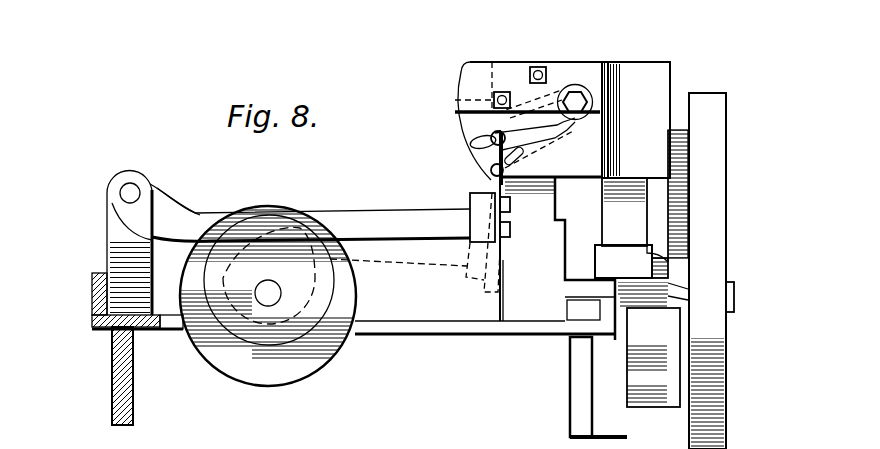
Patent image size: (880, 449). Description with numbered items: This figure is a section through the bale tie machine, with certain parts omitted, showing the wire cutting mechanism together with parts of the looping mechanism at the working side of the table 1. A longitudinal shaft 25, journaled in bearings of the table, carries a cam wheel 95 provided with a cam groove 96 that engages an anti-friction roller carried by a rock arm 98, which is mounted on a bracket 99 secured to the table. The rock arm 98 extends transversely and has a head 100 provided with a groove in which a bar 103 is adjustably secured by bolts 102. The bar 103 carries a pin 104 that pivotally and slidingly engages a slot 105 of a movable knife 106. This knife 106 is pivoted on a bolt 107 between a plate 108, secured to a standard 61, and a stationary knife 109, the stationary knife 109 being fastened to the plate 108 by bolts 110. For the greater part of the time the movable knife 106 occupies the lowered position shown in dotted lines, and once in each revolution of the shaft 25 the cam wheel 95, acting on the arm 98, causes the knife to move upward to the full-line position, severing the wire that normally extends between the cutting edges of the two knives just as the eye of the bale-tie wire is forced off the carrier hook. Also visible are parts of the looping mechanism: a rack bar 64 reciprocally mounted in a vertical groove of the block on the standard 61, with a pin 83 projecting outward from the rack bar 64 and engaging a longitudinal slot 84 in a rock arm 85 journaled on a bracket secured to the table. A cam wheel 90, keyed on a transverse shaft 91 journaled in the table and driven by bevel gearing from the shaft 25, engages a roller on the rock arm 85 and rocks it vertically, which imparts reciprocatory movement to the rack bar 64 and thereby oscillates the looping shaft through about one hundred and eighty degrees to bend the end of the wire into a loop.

The table 1 is at (92, 319).
The longitudinal shaft 25 is at (271, 291).
The standard 61 is at (553, 208).
The rack bar 64 is at (635, 196).
The pin 83 is at (676, 258).
The longitudinal slot 84 is at (670, 270).
The rock arm 85 is at (662, 403).
The cam wheel 90 is at (726, 375).
The transverse shaft 91 is at (734, 298).
The cam wheel 95 is at (232, 222).
The cam groove 96 is at (277, 222).
The rock arm 98 is at (168, 219).
The bracket 99 is at (120, 235).
The head 100 is at (477, 218).
The bolts 102 is at (510, 205).
The bar 103 is at (503, 258).
The pin 104 is at (478, 158).
The slot 105 is at (482, 142).
The knife 106 is at (468, 130).
The bolt 107 is at (577, 100).
The plate 108 is at (562, 128).
The stationary knife 109 is at (500, 90).
The bolts 110 is at (537, 70).